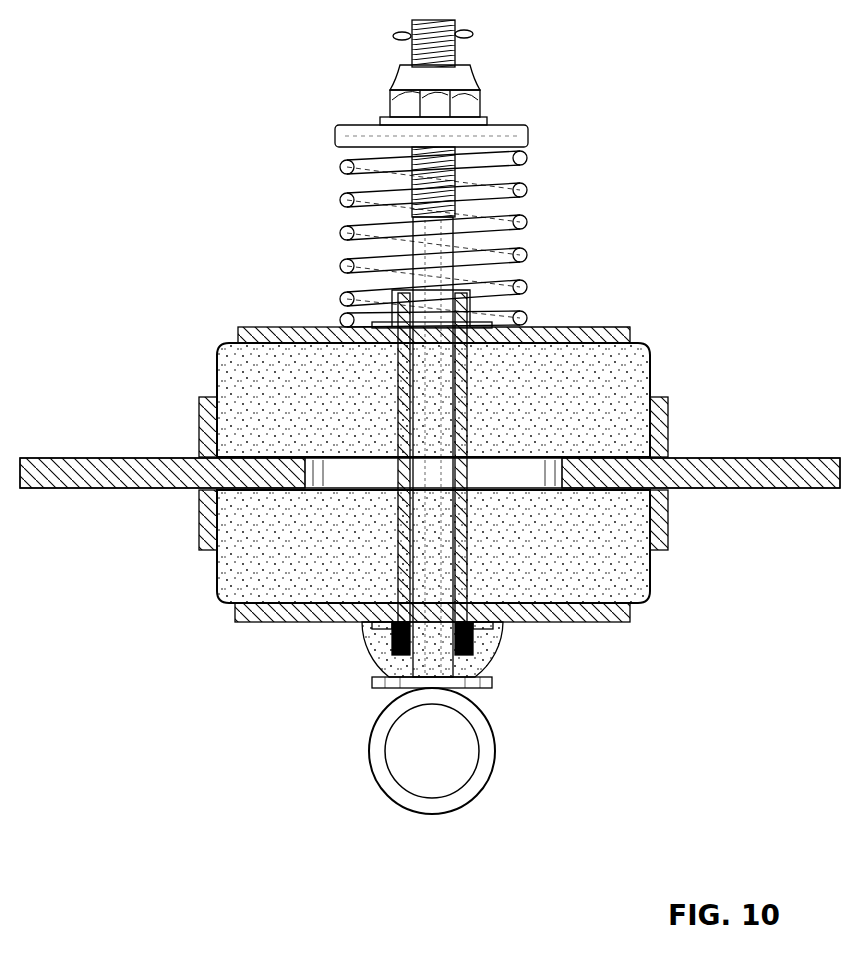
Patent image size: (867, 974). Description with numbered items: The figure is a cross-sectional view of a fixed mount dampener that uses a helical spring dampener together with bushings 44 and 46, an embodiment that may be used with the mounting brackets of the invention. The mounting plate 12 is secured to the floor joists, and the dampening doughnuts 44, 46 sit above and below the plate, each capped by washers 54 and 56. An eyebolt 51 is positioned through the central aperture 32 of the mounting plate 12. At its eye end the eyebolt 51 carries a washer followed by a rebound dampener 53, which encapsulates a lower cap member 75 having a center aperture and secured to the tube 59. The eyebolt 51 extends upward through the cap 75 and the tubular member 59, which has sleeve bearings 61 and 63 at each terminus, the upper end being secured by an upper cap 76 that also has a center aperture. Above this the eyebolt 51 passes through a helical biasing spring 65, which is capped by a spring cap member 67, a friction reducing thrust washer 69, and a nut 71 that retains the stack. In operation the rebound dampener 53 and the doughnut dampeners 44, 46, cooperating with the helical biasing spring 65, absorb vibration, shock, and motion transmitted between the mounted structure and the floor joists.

The mounting plate 12 is at (680, 458).
The central aperture 32 is at (518, 463).
The bushing 44 is at (216, 369).
The bushing 46 is at (223, 588).
The eyebolt 51 is at (495, 756).
The rebound dampener 53 is at (492, 645).
The washer 54 is at (253, 623).
The washer 56 is at (295, 327).
The tubular member 59 is at (500, 345).
The sleeve bearing 61 is at (500, 653).
The sleeve bearing 63 is at (478, 300).
The helical biasing spring 65 is at (527, 160).
The spring cap member 67 is at (527, 135).
The friction reducing thrust washer 69 is at (490, 115).
The nut 71 is at (470, 75).
The lower cap member 75 is at (372, 680).
The upper cap 76 is at (473, 292).